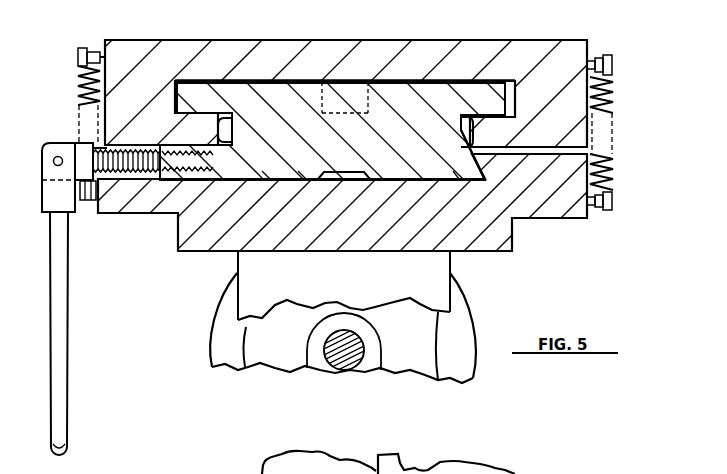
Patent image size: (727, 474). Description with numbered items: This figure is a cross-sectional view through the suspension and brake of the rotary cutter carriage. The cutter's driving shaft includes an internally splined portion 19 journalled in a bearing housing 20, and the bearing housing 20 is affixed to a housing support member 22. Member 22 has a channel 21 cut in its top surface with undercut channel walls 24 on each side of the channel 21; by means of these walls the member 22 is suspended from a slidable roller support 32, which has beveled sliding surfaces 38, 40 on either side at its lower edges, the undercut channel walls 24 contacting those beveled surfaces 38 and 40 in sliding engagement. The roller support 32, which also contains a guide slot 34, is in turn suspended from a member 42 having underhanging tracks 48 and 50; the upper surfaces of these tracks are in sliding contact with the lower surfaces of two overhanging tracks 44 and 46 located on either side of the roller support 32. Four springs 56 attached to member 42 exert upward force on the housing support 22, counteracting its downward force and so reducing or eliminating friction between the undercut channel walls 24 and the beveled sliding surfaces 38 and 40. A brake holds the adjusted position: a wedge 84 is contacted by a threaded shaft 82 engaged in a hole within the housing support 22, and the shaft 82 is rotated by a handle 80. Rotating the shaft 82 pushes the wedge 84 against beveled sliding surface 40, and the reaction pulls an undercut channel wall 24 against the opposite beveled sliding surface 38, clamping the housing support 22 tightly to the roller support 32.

The internally splined portion 19 is at (358, 345).
The bearing housing 20 is at (468, 298).
The channel 21 is at (266, 176).
The housing support member 22 is at (550, 212).
The undercut channel walls 24 is at (474, 164).
The roller support 32 is at (390, 98).
The guide slot 34 is at (350, 113).
The beveled sliding surface 38 is at (484, 178).
The beveled sliding surface 40 is at (176, 166).
The member 42 is at (509, 37).
The overhanging track 44 is at (192, 86).
The overhanging track 46 is at (493, 86).
The underhanging track 48 is at (223, 121).
The underhanging track 50 is at (469, 117).
The springs 56 is at (79, 85).
The handle 80 is at (68, 305).
The threaded shaft 82 is at (106, 147).
The wedge 84 is at (157, 184).